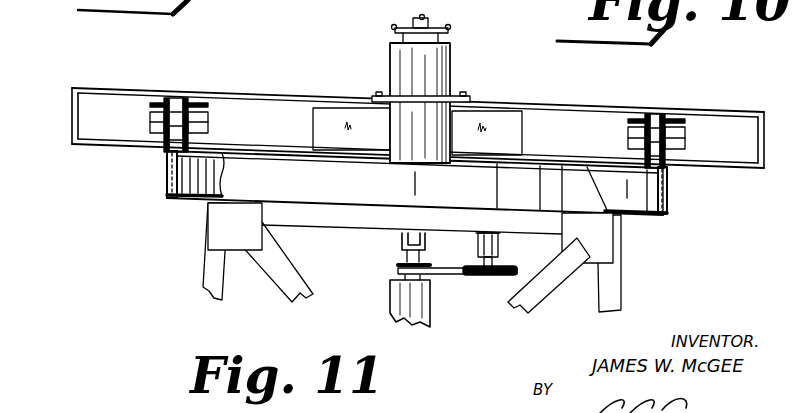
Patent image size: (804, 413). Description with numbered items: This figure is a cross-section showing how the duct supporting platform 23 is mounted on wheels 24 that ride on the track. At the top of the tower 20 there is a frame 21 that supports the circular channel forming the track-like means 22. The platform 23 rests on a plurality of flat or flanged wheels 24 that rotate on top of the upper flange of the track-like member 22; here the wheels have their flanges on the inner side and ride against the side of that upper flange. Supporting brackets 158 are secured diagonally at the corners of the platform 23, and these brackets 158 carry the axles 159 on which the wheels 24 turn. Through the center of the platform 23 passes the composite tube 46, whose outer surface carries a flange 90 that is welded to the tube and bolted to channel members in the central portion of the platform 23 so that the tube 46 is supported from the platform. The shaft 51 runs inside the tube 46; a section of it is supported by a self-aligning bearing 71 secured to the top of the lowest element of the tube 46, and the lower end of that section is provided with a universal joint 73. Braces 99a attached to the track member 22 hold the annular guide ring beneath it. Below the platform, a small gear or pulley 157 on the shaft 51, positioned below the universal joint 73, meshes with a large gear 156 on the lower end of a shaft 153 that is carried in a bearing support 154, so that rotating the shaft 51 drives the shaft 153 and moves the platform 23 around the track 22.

The tower 20 is at (619, 253).
The frame 21 is at (317, 222).
The track-like means 22 is at (190, 200).
The platform 23 is at (72, 127).
The wheels 24 is at (167, 153).
The composite tube 46 is at (450, 75).
The shaft 51 is at (418, 17).
The self-aligning bearing 71 is at (440, 30).
The universal joint 73 is at (400, 247).
The flange 90 is at (466, 97).
The braces 99a is at (385, 120).
The shaft 153 is at (482, 258).
The bearing support 154 is at (505, 240).
The large gear 156 is at (480, 275).
The small gear 157 is at (398, 266).
The supporting brackets 158 is at (150, 103).
The axles 159 is at (150, 122).